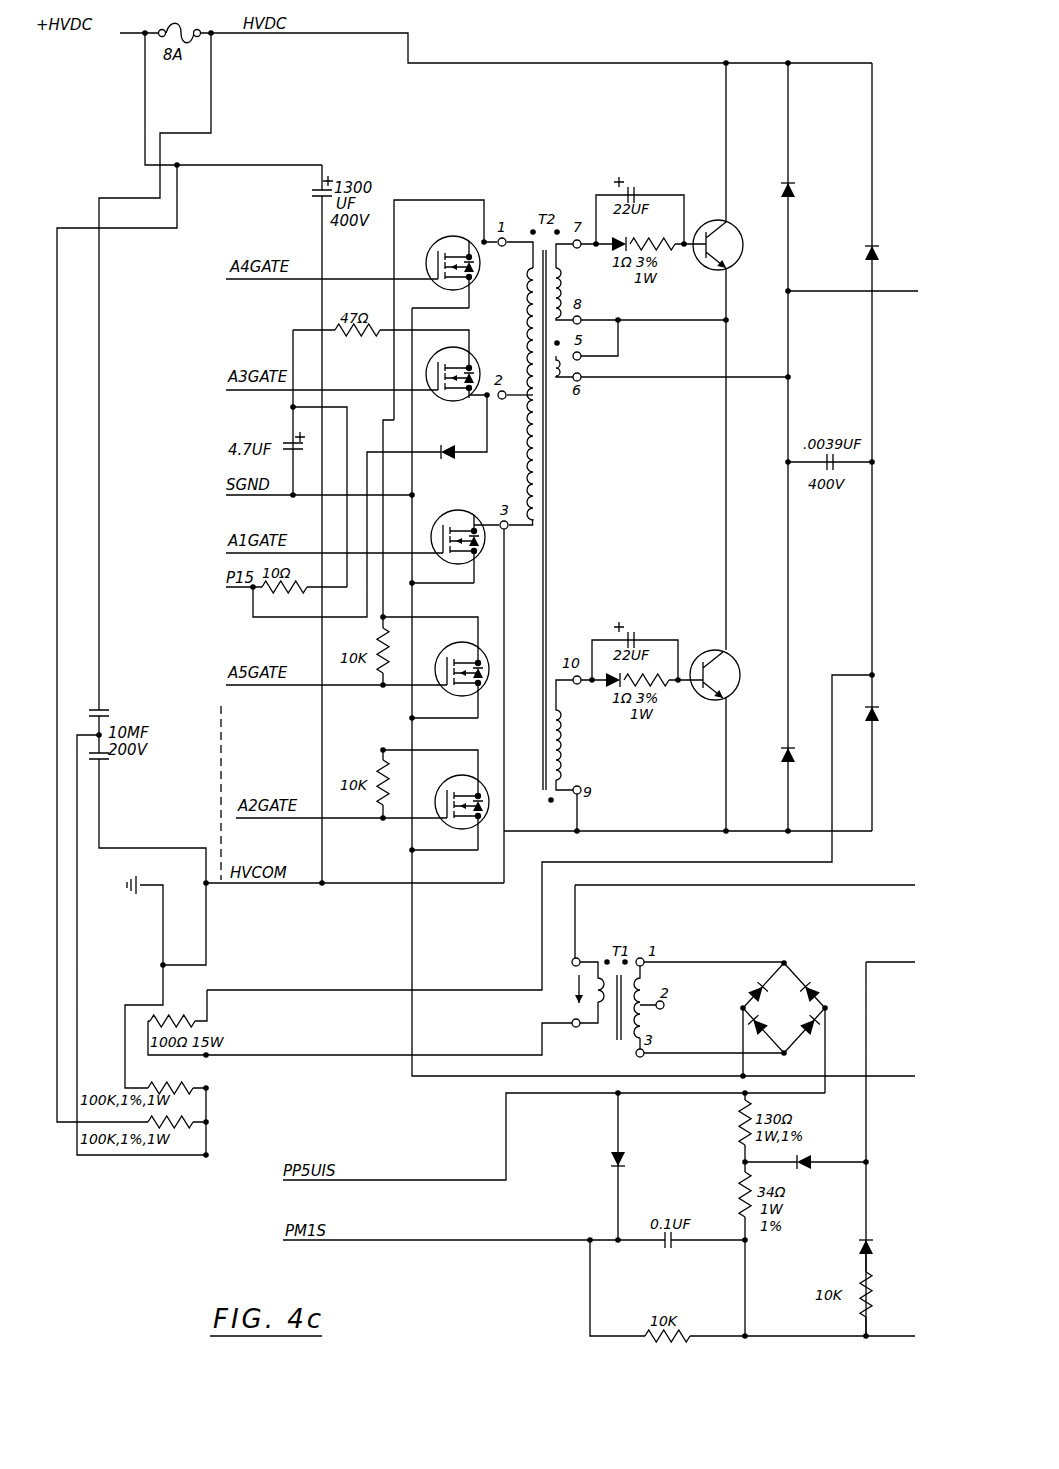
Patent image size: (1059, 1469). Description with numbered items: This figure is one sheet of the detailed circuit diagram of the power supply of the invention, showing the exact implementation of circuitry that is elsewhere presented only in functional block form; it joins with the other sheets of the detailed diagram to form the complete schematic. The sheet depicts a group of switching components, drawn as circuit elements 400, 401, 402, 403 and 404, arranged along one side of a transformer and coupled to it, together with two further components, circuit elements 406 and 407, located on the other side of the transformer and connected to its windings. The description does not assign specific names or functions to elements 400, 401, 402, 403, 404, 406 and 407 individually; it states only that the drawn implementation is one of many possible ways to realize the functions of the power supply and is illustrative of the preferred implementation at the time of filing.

The power MOSFET transistor 400 is at (480, 269).
The power MOSFET transistor 401 is at (478, 345).
The power MOSFET transistor 402 is at (466, 512).
The power MOSFET transistor 403 is at (455, 648).
The power MOSFET transistor 404 is at (456, 773).
The bipolar transistor 406 is at (767, 210).
The bipolar transistor 407 is at (735, 658).